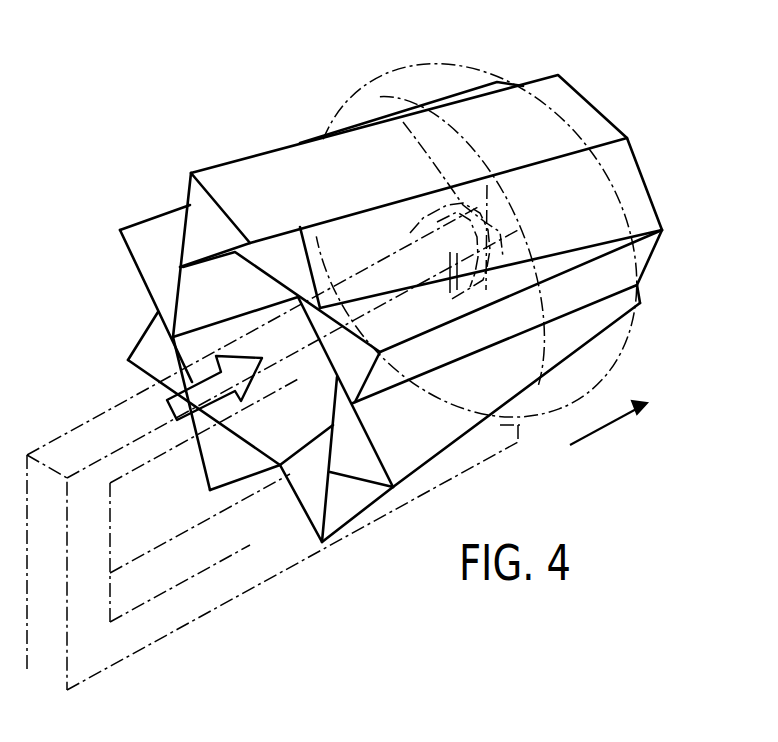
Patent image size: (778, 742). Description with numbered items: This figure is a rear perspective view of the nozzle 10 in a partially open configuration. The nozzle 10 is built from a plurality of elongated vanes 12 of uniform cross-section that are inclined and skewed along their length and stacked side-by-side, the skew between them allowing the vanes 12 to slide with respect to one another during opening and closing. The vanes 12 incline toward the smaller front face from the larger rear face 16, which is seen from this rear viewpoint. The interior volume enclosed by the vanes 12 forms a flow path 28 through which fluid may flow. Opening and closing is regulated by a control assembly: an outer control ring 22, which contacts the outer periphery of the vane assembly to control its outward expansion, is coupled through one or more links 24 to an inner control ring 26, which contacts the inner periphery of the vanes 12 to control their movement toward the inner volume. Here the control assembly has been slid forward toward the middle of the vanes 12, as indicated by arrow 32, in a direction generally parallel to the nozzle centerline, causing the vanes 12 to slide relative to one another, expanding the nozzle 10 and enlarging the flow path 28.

The nozzle 10 is at (382, 308).
The vanes 12 is at (278, 241).
The rear face 16 is at (124, 272).
The outer control ring 22 is at (412, 65).
The links 24 is at (207, 600).
The inner control ring 26 is at (486, 292).
The flow path 28 is at (178, 378).
The arrow 32 is at (605, 427).